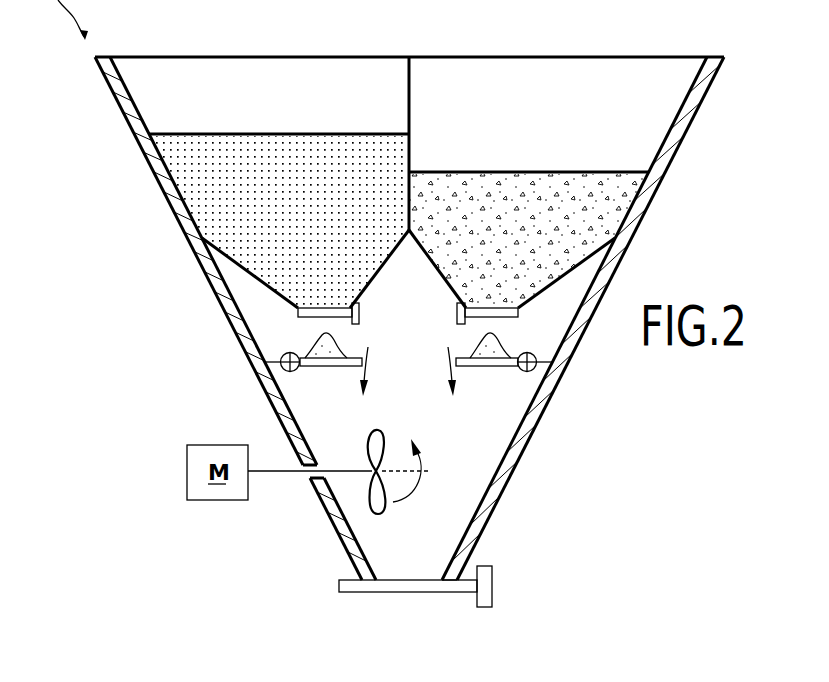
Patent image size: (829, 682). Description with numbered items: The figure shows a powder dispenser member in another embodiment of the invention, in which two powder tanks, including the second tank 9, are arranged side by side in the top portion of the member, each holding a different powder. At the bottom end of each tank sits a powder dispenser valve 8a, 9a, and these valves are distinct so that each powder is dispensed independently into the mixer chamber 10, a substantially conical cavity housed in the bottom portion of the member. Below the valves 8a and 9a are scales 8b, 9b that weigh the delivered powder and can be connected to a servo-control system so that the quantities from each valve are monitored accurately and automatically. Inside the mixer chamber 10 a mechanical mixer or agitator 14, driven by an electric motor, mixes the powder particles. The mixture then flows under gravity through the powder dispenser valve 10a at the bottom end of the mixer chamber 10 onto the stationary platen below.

The second powder tank 9 is at (648, 120).
The powder dispenser valve 8a is at (298, 312).
The scales 8b is at (360, 356).
The powder dispenser valve 9a is at (520, 312).
The scales 9b is at (483, 367).
The mixer chamber 10 is at (478, 468).
The powder dispenser valve 10a is at (493, 584).
The agitator 14 is at (392, 410).